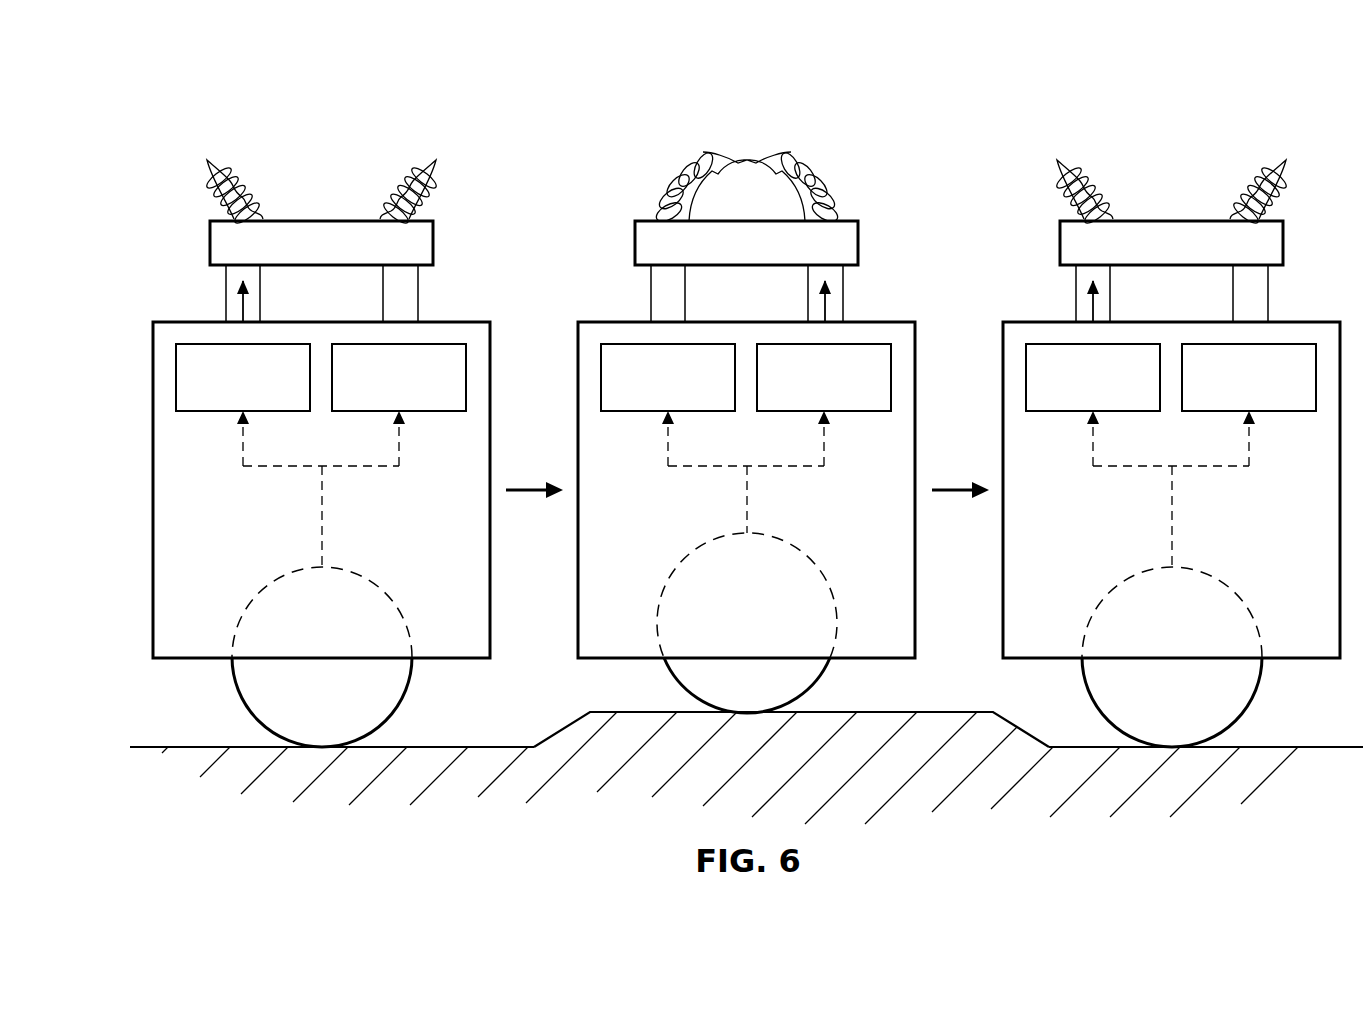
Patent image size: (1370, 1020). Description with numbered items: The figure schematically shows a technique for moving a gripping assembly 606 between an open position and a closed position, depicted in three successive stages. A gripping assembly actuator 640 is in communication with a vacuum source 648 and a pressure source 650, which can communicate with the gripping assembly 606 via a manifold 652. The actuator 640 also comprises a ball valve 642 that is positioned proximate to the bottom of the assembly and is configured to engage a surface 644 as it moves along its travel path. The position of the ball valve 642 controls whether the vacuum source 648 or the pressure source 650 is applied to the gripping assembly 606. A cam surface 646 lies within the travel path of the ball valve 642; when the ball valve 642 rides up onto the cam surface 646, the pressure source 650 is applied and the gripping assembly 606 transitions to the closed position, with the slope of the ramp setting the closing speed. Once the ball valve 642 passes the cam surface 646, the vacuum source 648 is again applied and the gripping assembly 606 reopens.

The gripping assembly 606 is at (316, 137).
The gripping assembly actuator 640 is at (470, 304).
The ball valve 642 is at (238, 693).
The surface 644 is at (438, 747).
The cam surface 646 is at (944, 711).
The vacuum source 648 is at (208, 413).
The pressure source 650 is at (433, 413).
The manifold 652 is at (193, 293).